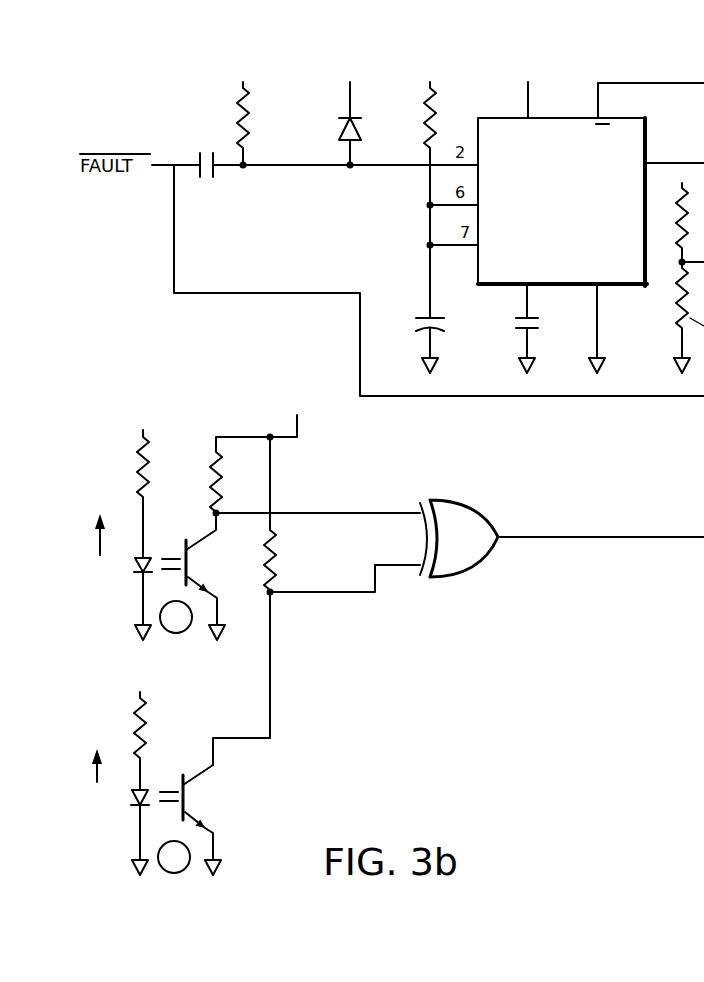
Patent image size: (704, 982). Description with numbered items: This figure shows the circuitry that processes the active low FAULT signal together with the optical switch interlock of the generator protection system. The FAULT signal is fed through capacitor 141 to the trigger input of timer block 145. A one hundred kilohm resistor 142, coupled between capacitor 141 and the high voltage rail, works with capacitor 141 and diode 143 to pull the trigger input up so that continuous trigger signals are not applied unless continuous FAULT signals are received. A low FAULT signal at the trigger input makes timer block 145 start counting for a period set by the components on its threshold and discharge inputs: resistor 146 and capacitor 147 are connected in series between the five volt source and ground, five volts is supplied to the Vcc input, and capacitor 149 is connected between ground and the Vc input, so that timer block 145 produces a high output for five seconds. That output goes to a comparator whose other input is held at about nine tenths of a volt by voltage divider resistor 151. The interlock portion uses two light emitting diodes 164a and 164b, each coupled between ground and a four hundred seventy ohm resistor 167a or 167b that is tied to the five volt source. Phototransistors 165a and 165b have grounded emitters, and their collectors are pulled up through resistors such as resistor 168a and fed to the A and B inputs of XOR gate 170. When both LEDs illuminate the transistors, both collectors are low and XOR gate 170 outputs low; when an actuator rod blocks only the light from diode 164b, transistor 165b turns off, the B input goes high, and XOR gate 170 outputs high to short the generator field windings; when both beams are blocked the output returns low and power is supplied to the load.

The capacitor 141 is at (215, 176).
The 100k ohm resistor 142 is at (240, 105).
The diode 143 is at (340, 115).
The timer block 145 is at (650, 122).
The 100k ohm resistor 146 is at (462, 92).
The 33 microfarad capacitor 147 is at (425, 333).
The 0.01 microfarad capacitor 149 is at (524, 336).
The 47K ohm voltage divider resistor 151 is at (672, 245).
The light emitting diode 164a is at (137, 574).
The light emitting diode 164b is at (135, 807).
The photoelectric transistor 165a is at (190, 562).
The photoelectric transistor 165b is at (190, 798).
The 470 ohm resistor 167a is at (140, 455).
The 470 ohm resistor 167b is at (150, 722).
The resistor 168a is at (214, 450).
The XOR gate 170 is at (458, 505).